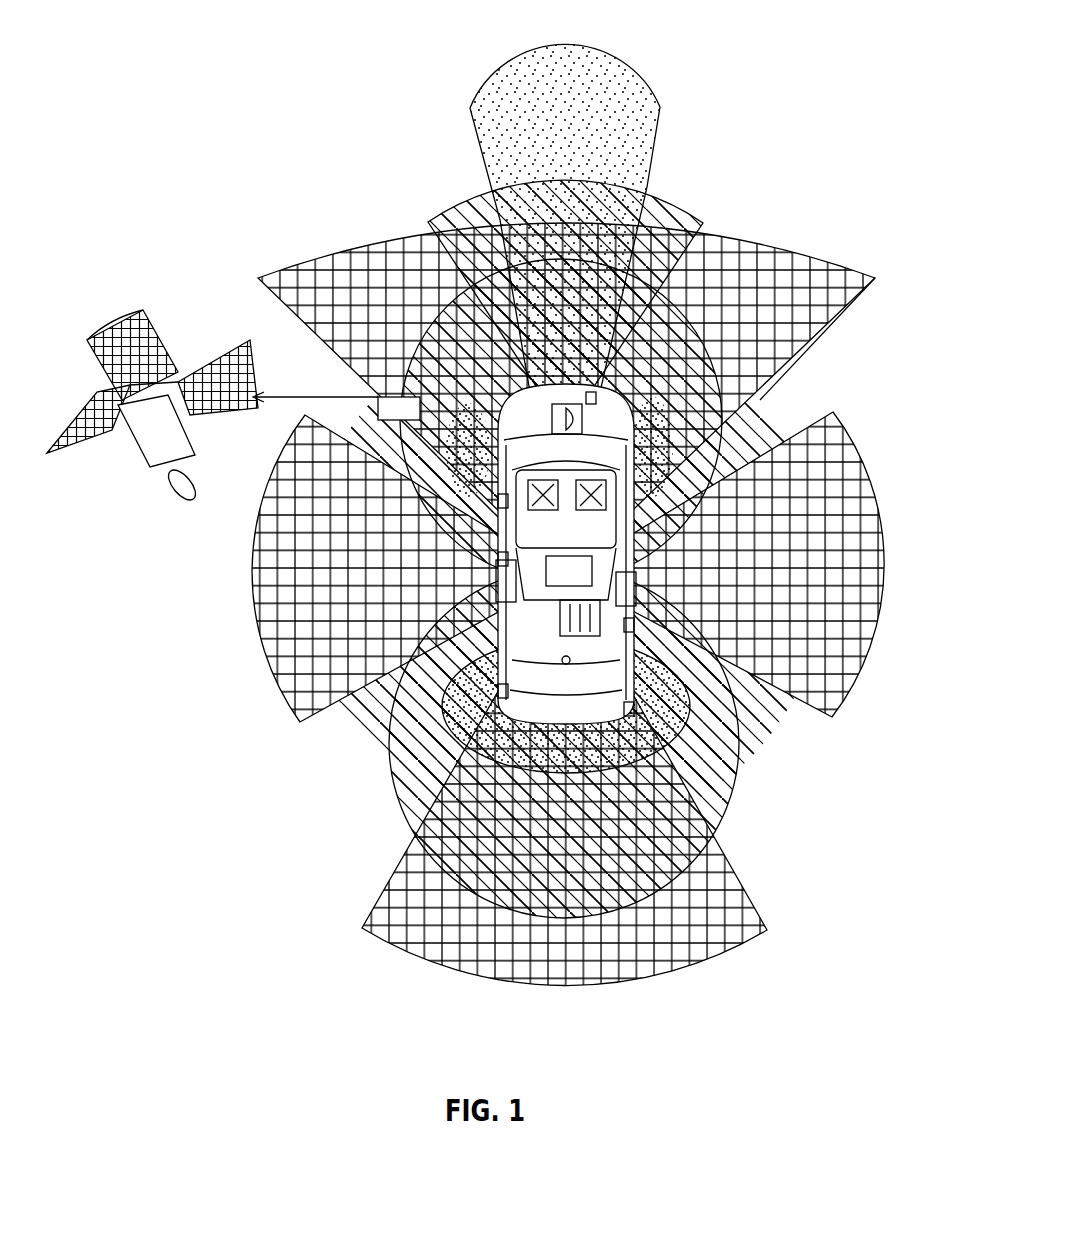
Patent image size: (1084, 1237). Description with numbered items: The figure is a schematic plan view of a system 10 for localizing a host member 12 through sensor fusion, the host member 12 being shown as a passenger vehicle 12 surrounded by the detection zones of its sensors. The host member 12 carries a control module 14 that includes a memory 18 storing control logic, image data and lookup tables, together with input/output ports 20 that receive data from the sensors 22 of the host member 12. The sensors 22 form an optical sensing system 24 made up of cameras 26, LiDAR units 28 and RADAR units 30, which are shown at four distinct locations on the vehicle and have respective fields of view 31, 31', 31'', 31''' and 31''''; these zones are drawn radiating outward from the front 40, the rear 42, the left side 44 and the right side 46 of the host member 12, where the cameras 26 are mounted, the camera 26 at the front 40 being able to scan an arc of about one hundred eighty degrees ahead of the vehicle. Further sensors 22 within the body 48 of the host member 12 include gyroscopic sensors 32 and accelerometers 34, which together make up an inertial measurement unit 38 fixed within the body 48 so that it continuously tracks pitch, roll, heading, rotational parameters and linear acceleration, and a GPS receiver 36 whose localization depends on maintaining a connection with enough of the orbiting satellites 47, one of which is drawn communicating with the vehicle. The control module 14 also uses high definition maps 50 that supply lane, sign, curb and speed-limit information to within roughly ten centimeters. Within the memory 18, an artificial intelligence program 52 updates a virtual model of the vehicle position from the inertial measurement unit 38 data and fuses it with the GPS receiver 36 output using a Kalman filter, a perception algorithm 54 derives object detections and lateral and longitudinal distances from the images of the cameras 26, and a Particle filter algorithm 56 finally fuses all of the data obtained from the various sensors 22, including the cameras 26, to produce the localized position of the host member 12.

The system 10 is at (778, 174).
The host member 12 is at (630, 391).
The control module 14 is at (594, 570).
The memory 18 is at (636, 614).
The input/output ports 20 is at (500, 560).
The sensors 22 is at (350, 584).
The optical sensing system 24 is at (470, 330).
The cameras 26 is at (445, 524).
The LiDAR units 28 is at (445, 524).
The RADAR units 30 is at (592, 400).
The field of view 31 is at (560, 620).
The field of view 31' is at (654, 578).
The field of view 31'' is at (599, 301).
The field of view 31''' is at (560, 519).
The field of view 31'''' is at (610, 428).
The gyroscopic sensors 32 is at (515, 500).
The accelerometers 34 is at (640, 625).
The GPS receiver 36 is at (840, 312).
The inertial measurement unit 38 is at (612, 480).
The front 40 is at (585, 405).
The rear 42 is at (530, 725).
The left side 44 is at (460, 450).
The right side 46 is at (665, 680).
The satellites 47 is at (150, 450).
The body 48 is at (608, 496).
The high definition maps 50 is at (740, 800).
The artificial intelligence program 52 is at (410, 904).
The perception algorithm 54 is at (410, 904).
The Particle filter algorithm 56 is at (520, 740).